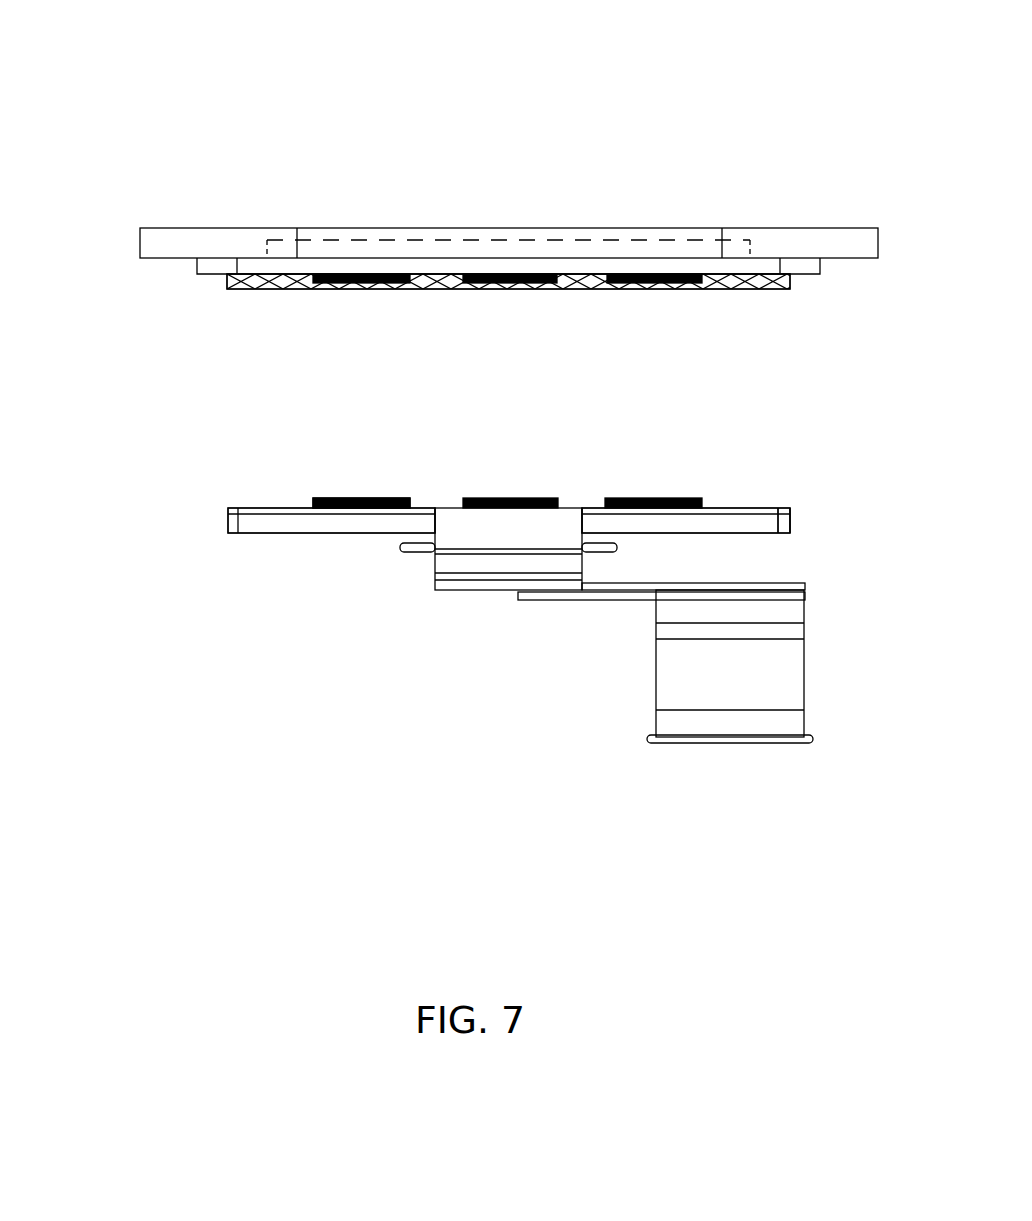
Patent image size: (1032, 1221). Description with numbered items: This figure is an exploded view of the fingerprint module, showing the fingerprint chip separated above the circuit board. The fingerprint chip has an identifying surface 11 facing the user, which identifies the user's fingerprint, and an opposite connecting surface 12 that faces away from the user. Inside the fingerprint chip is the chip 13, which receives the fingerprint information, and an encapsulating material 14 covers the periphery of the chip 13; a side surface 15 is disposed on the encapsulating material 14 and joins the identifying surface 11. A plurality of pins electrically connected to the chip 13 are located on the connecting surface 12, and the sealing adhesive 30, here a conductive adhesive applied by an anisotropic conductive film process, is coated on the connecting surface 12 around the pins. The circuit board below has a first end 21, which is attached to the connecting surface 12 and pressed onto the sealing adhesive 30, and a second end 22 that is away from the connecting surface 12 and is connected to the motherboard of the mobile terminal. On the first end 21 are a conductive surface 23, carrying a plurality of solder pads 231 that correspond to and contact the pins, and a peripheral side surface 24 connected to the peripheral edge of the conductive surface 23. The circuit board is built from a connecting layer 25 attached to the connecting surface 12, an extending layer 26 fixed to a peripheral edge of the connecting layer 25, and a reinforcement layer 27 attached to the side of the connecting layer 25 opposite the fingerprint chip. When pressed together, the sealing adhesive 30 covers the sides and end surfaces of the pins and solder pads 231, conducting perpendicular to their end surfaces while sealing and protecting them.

The identifying surface 11 is at (685, 228).
The connecting surface 12 is at (265, 283).
The chip 13 is at (327, 240).
The encapsulating material 14 is at (210, 240).
The pins 15 is at (698, 283).
The first end 21 is at (326, 548).
The second end 22 is at (612, 732).
The conductive surface 23 is at (747, 508).
The solder pads 231 is at (652, 498).
The peripheral side surface 24 is at (790, 512).
The connecting layer 25 is at (393, 520).
The extending layer 26 is at (563, 522).
The reinforcement layer 27 is at (296, 524).
The sealing adhesive 30 is at (297, 283).